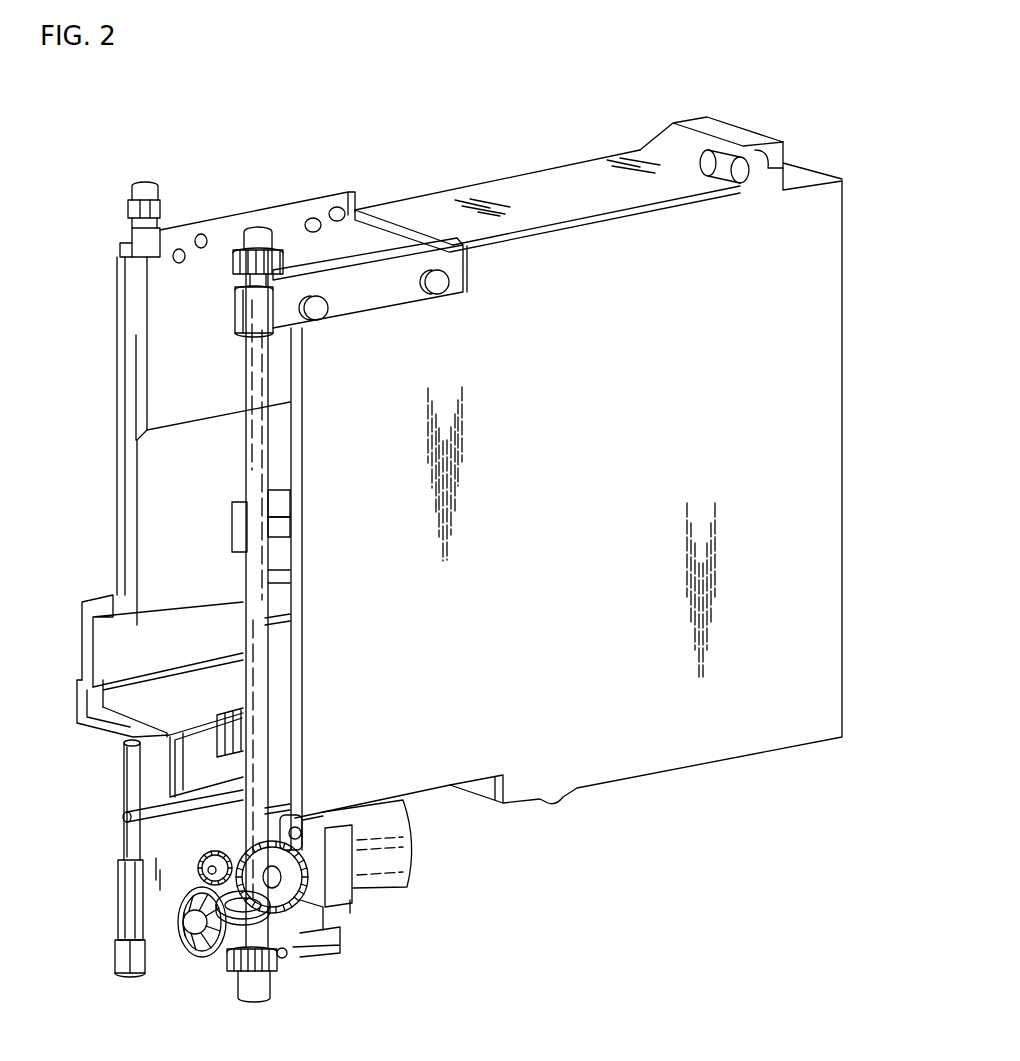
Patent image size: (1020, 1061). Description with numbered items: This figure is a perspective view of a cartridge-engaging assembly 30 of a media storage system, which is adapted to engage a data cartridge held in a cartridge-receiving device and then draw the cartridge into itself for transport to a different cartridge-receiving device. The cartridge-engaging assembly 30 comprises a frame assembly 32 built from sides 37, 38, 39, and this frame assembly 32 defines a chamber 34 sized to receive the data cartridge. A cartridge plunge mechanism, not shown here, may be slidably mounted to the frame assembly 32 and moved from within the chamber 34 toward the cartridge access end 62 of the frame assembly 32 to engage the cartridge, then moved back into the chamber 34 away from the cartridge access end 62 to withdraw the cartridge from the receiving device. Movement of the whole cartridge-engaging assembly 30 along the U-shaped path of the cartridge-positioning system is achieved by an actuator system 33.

The cartridge-engaging assembly 30 is at (247, 120).
The frame assembly 32 is at (763, 525).
The actuator system 33 is at (408, 888).
The chamber 34 is at (183, 405).
The side 37 is at (478, 182).
The side 38 is at (160, 310).
The side 39 is at (601, 522).
The cartridge access end 62 is at (112, 522).